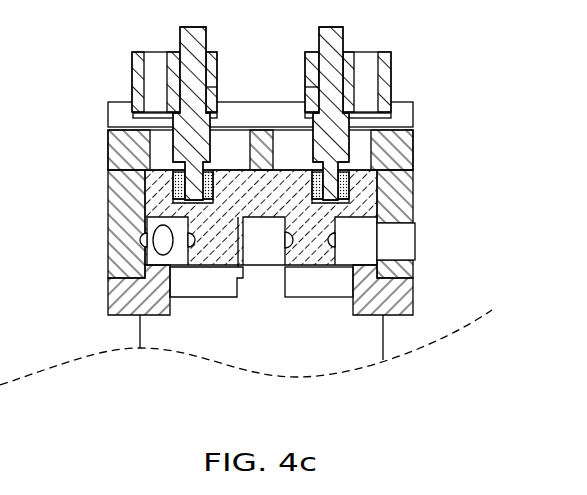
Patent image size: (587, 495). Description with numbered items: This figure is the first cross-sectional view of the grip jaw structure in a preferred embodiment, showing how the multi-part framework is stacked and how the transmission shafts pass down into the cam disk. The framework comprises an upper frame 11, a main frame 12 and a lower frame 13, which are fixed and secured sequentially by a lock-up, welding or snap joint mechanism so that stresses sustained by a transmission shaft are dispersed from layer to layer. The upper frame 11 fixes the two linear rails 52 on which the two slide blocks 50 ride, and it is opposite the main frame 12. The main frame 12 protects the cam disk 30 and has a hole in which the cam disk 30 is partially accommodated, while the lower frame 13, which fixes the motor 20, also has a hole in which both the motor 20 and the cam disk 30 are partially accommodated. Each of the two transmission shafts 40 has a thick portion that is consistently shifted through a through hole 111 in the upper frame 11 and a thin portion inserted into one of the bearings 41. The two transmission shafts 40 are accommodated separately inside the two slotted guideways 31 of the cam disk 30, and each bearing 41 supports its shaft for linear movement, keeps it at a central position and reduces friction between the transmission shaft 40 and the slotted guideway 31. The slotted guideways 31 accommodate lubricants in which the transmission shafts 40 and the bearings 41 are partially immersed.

The transmission shaft 40 is at (182, 44).
The slide block 50 is at (392, 72).
The linear rail 52 is at (413, 108).
The upper frame 11 is at (402, 164).
The through hole 111 is at (146, 154).
The bearing 41 is at (178, 186).
The cam disk 30 is at (190, 236).
The slotted guideway 31 is at (346, 201).
The lower frame 13 is at (120, 298).
The main frame 12 is at (397, 272).
The motor 20 is at (140, 330).